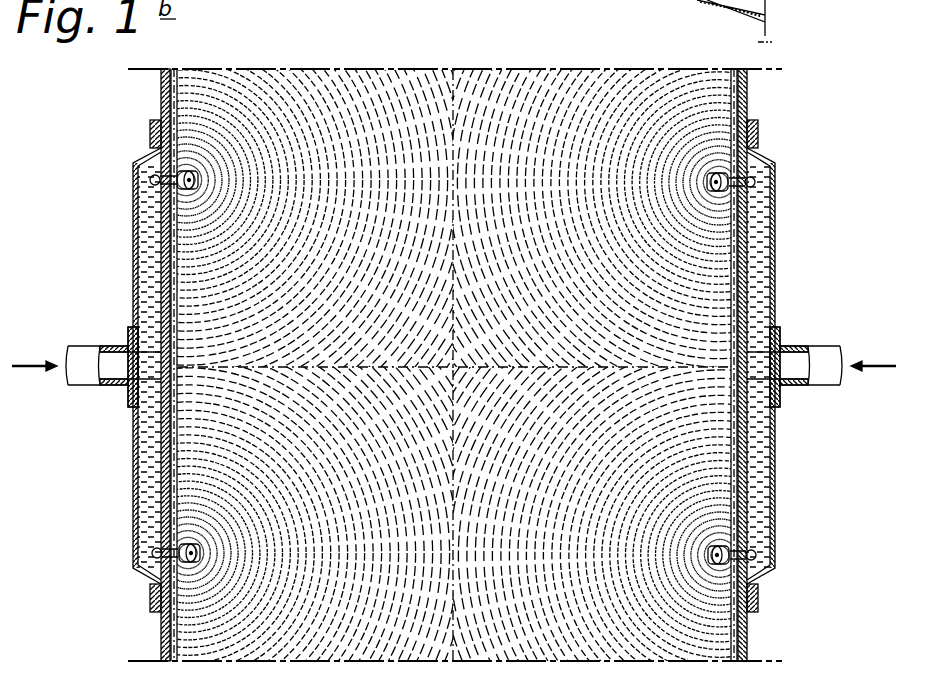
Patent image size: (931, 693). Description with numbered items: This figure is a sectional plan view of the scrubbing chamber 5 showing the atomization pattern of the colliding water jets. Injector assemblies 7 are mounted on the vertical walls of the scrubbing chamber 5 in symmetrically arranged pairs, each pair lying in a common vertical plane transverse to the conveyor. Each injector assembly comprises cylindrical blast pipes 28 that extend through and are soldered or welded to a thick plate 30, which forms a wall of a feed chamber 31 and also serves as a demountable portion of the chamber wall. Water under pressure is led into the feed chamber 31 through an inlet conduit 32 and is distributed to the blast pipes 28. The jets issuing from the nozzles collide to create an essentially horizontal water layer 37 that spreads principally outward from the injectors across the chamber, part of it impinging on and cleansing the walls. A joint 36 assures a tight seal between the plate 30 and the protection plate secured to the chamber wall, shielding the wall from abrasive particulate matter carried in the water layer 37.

The scrubbing chamber 5 is at (365, 90).
The injector assembly 7 is at (128, 340).
The blast pipe 28 is at (178, 178).
The plate 30 is at (162, 232).
The feed chamber 31 is at (155, 458).
The inlet conduit 32 is at (95, 383).
The joint 36 is at (755, 135).
The water layer 37 is at (527, 97).